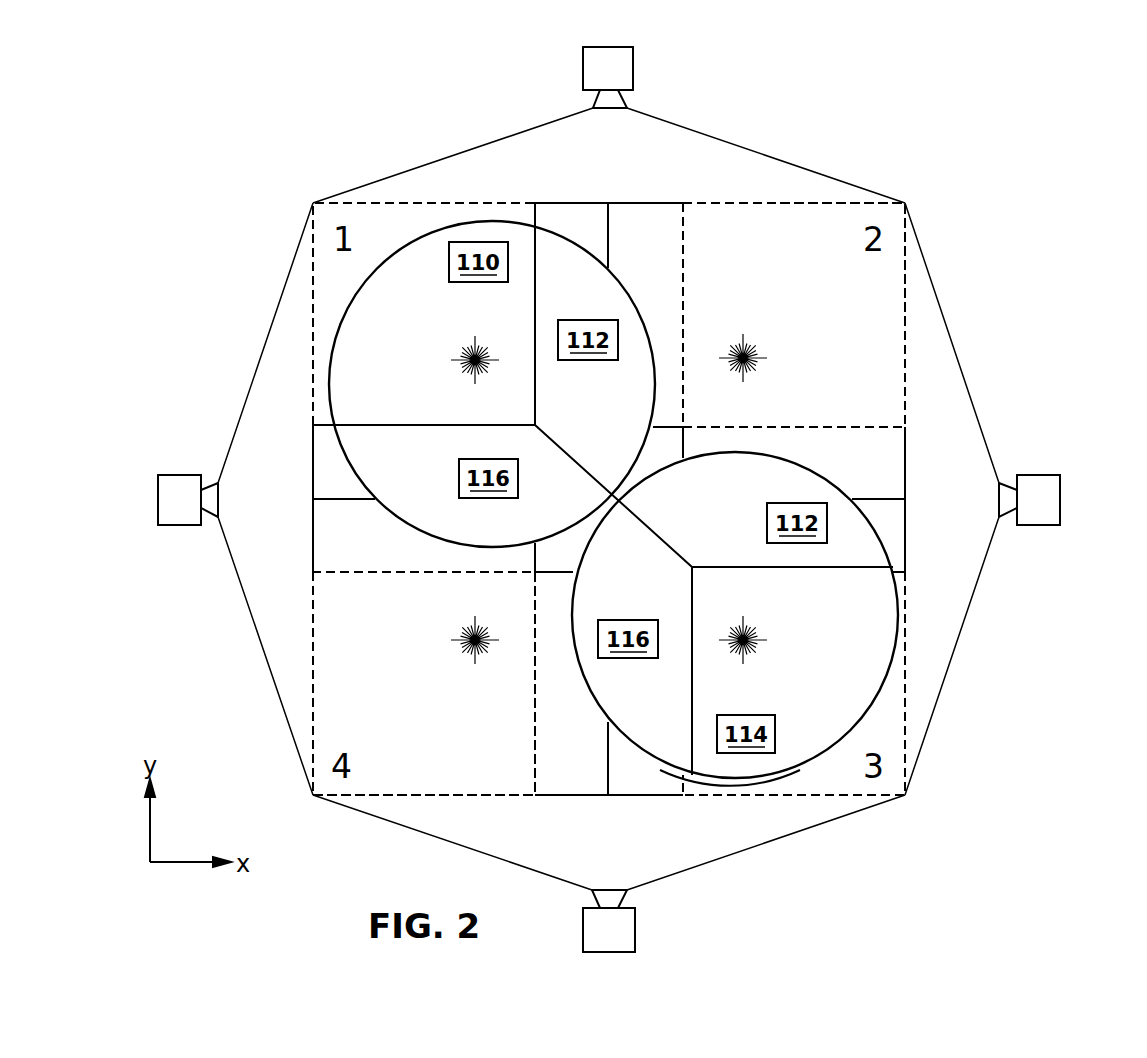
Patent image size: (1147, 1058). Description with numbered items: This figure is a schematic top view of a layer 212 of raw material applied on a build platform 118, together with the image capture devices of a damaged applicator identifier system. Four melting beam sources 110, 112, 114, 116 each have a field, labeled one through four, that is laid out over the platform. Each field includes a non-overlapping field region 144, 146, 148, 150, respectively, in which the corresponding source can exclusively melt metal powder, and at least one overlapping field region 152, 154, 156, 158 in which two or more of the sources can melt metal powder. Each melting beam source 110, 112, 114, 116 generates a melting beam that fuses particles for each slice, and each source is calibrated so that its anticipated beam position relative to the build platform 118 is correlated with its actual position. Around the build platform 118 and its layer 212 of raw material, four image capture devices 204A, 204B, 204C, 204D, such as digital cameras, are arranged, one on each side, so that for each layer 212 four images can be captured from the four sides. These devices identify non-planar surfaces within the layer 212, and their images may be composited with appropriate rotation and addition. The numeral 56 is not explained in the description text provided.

The vehicle 56 is at (700, 777).
The melting beam source 110 is at (473, 358).
The melting beam source 112 is at (748, 358).
The melting beam source 114 is at (750, 650).
The melting beam source 116 is at (470, 640).
The build platform 118 is at (883, 203).
The non-overlapping field region 144 is at (375, 232).
The non-overlapping field region 146 is at (883, 298).
The non-overlapping field region 148 is at (820, 768).
The non-overlapping field region 150 is at (338, 708).
The overlapping field region 152 is at (647, 175).
The overlapping field region 154 is at (925, 463).
The overlapping field region 156 is at (636, 818).
The overlapping field region 158 is at (288, 546).
The image capture device 204A is at (1038, 508).
The image capture device 204B is at (615, 72).
The image capture device 204C is at (180, 487).
The image capture device 204D is at (612, 927).
The layer of raw material 212 is at (437, 763).